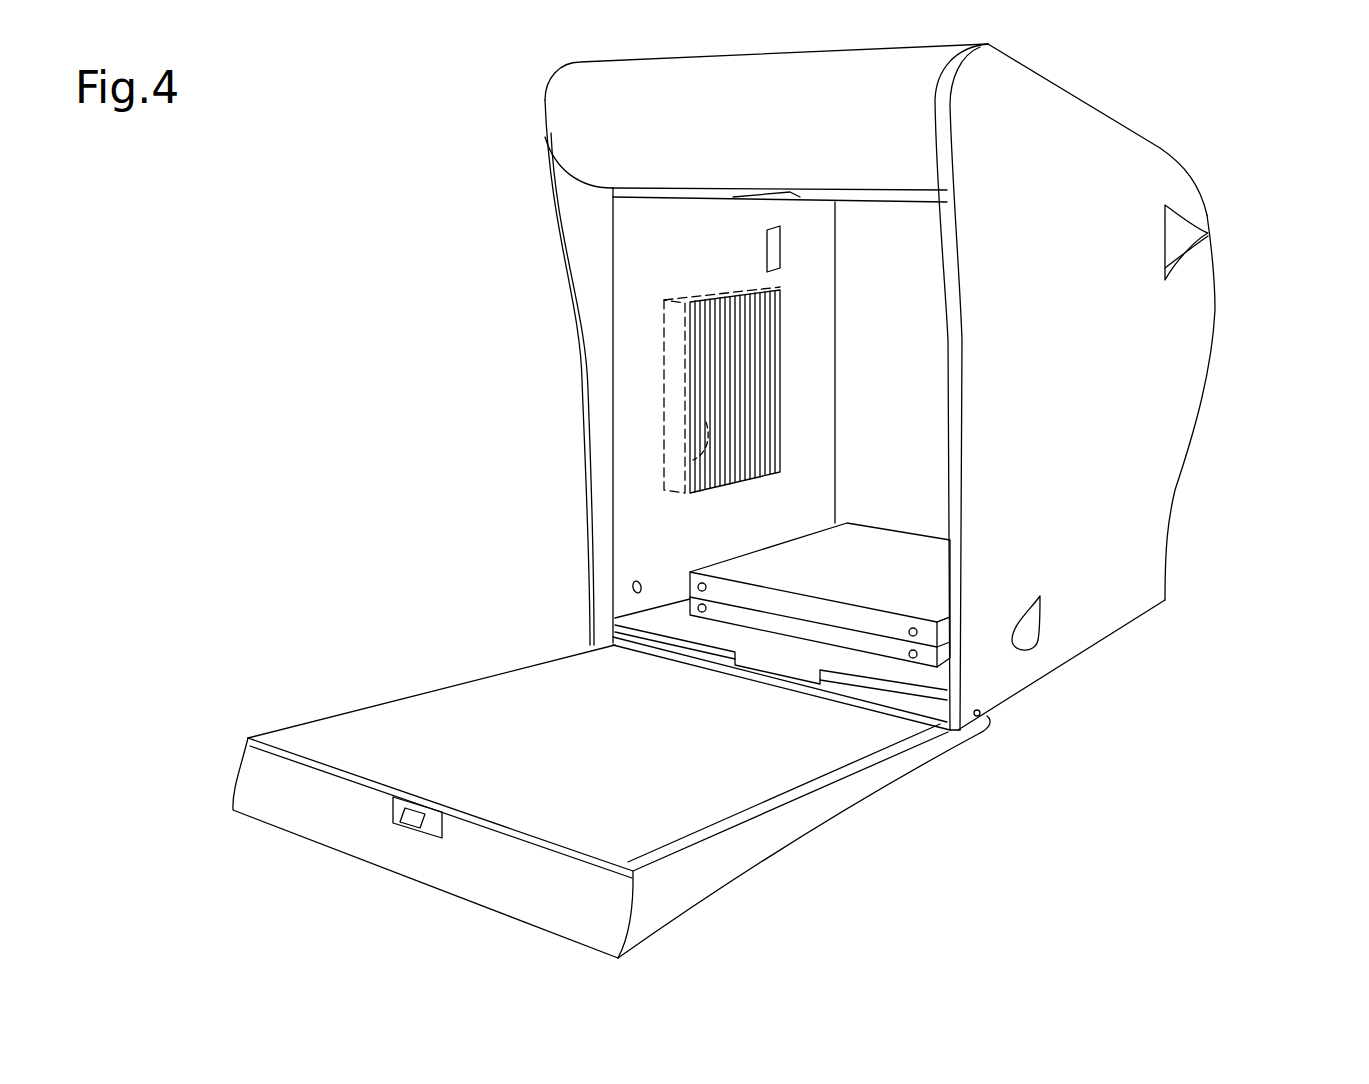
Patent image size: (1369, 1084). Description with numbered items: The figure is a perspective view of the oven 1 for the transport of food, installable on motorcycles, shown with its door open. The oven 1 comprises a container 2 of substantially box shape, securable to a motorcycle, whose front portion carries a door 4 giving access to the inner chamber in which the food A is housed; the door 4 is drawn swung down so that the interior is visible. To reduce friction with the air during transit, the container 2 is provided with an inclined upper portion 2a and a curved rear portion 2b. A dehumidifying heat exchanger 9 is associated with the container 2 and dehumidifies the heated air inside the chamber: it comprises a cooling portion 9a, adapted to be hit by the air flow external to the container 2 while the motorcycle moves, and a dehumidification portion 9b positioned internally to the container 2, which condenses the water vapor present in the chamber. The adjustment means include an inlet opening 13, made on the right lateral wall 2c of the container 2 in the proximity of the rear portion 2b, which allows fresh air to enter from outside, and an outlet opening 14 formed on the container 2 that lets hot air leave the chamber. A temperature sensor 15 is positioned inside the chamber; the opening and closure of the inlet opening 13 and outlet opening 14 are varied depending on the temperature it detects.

The oven 1 is at (285, 190).
The container 2 is at (1194, 418).
The inclined upper portion 2a is at (1155, 147).
The curved rear portion 2b is at (1215, 310).
The right lateral wall 2c is at (1106, 392).
The door 4 is at (494, 874).
The dehumidifying heat exchanger 9 is at (648, 347).
The cooling portion 9a is at (663, 320).
The dehumidification portion 9b is at (690, 460).
The inlet opening 13 is at (1182, 230).
The outlet opening 14 is at (632, 588).
The temperature sensor 15 is at (775, 237).
The food A is at (886, 582).